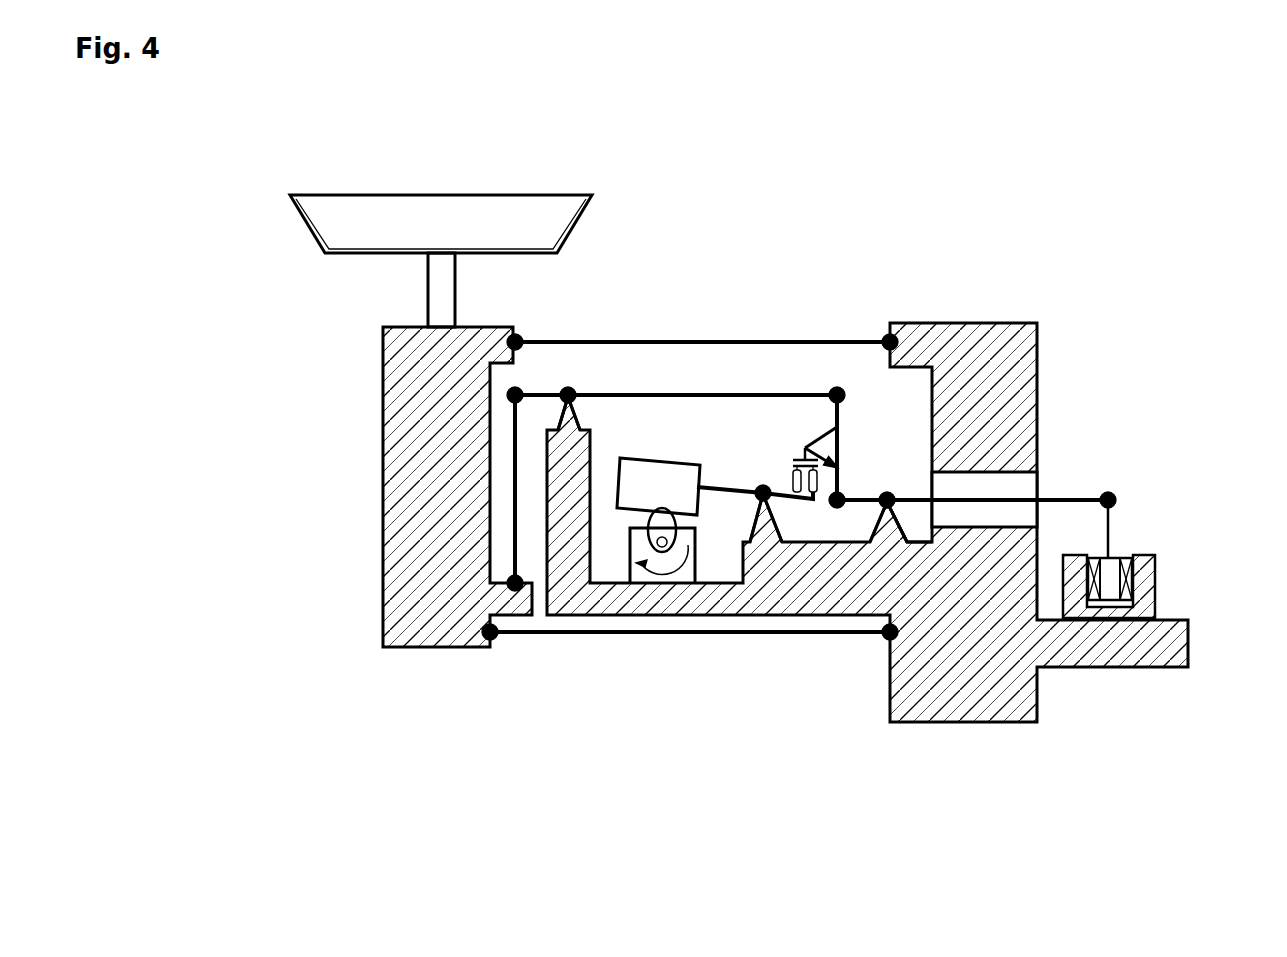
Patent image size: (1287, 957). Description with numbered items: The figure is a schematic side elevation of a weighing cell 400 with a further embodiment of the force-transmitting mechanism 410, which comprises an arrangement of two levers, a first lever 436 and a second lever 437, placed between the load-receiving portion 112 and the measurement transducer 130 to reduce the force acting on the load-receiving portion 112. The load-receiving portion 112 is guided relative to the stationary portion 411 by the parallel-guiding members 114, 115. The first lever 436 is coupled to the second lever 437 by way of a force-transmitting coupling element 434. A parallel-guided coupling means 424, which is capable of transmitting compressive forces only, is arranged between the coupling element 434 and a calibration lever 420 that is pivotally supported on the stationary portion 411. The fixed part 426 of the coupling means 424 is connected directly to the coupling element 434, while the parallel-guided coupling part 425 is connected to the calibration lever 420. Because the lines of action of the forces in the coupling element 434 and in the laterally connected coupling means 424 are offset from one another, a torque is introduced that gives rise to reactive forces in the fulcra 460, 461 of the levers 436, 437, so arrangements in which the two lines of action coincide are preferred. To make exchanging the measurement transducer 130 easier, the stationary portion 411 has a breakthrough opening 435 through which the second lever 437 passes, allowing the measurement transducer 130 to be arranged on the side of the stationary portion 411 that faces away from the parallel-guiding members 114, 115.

The weighing cell 400 is at (746, 465).
The load-receiving portion 112 is at (410, 405).
The parallel-guiding member 114 is at (742, 340).
The parallel-guiding member 115 is at (617, 633).
The measurement transducer 130 is at (1155, 587).
The force-transmitting mechanism 410 is at (882, 465).
The stationary portion 411 is at (978, 682).
The calibration lever 420 is at (735, 495).
The parallel-guided coupling means 424 is at (1020, 295).
The parallel-guided coupling part 425 is at (803, 497).
The fixed part 426 is at (883, 295).
The coupling element 434 is at (830, 445).
The breakthrough opening 435 is at (1020, 490).
The first lever 436 is at (672, 393).
The second lever 437 is at (917, 503).
The fulcrum 460 is at (570, 390).
The fulcrum 461 is at (880, 507).